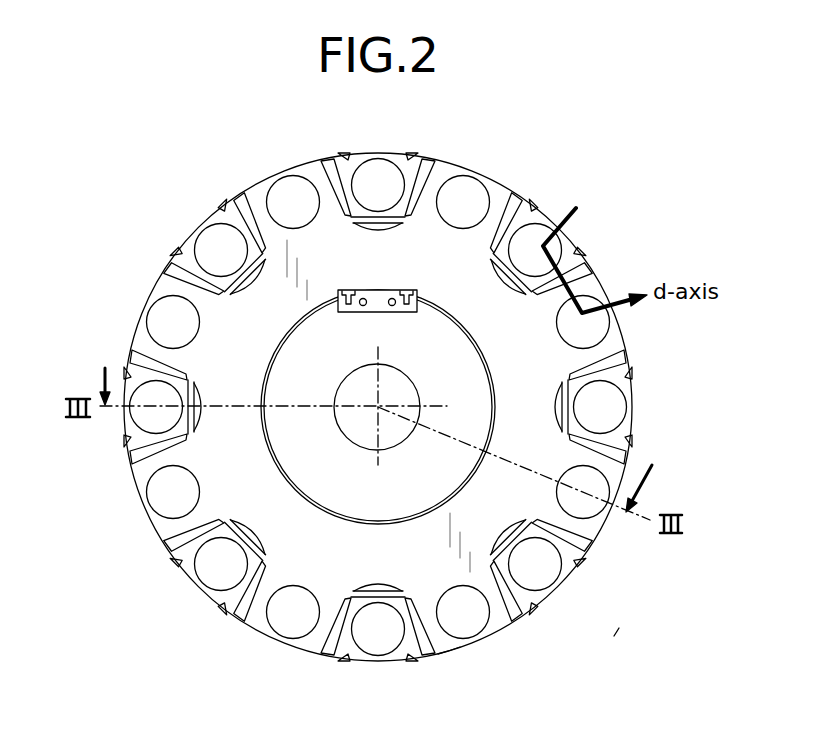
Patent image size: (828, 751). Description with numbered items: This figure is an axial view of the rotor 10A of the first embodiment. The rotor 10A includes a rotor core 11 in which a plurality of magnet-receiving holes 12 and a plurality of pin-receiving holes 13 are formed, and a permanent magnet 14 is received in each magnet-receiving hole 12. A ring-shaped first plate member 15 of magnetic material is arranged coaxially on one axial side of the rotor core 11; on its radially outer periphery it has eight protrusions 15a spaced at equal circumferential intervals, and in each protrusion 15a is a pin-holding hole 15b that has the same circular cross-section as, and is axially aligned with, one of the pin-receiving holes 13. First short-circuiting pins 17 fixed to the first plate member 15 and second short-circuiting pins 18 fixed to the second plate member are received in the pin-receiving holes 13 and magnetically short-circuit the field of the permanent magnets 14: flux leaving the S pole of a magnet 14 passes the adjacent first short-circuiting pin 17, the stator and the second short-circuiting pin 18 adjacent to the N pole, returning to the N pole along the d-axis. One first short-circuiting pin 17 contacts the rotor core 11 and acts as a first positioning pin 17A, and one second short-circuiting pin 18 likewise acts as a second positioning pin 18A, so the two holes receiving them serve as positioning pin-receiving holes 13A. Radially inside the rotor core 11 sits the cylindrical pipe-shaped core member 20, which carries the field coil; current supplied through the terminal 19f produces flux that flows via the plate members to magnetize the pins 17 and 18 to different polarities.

The rotor 10A is at (528, 138).
The rotor core 11 is at (212, 178).
The magnet-receiving hole 12 is at (339, 156).
The pin-receiving hole 13 is at (217, 230).
The positioning pin-receiving hole 13A is at (150, 385).
The permanent magnet 14 is at (327, 165).
The first plate member 15 is at (416, 562).
The protrusion 15a is at (448, 643).
The pin-holding hole 15b is at (165, 297).
The first short-circuiting pin 17 is at (470, 188).
The first positioning pin 17A is at (605, 513).
The second short-circuiting pin 18 is at (383, 165).
The second positioning pin 18A is at (143, 428).
The terminal 19f is at (393, 290).
The core member 20 is at (298, 460).